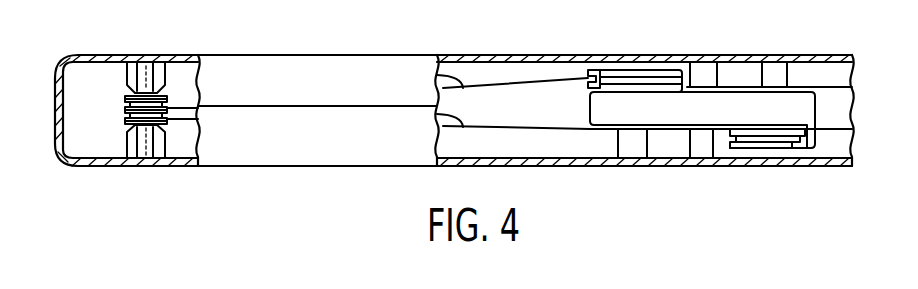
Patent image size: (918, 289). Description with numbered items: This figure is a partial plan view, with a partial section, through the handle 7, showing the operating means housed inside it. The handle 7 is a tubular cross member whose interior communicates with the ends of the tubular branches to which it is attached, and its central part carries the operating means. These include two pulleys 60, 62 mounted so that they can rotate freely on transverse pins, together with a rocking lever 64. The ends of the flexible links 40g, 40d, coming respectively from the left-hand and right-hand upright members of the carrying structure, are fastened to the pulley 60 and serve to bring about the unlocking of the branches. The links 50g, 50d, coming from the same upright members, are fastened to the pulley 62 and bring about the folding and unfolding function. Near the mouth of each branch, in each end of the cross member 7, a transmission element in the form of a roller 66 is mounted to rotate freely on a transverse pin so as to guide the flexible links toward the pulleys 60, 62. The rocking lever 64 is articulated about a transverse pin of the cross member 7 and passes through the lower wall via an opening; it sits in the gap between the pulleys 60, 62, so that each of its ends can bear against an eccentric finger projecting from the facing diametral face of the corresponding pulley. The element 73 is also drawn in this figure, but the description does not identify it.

The handle 7 is at (311, 66).
The roller 66 is at (139, 88).
The flexible link 40g is at (438, 76).
The flexible link 50g is at (450, 116).
The pulley 60 is at (607, 62).
The rocking lever 64 is at (605, 111).
The flexible link 40d is at (799, 75).
The flexible link 50d is at (836, 126).
The spacer 73 is at (668, 147).
The pulley 62 is at (727, 140).